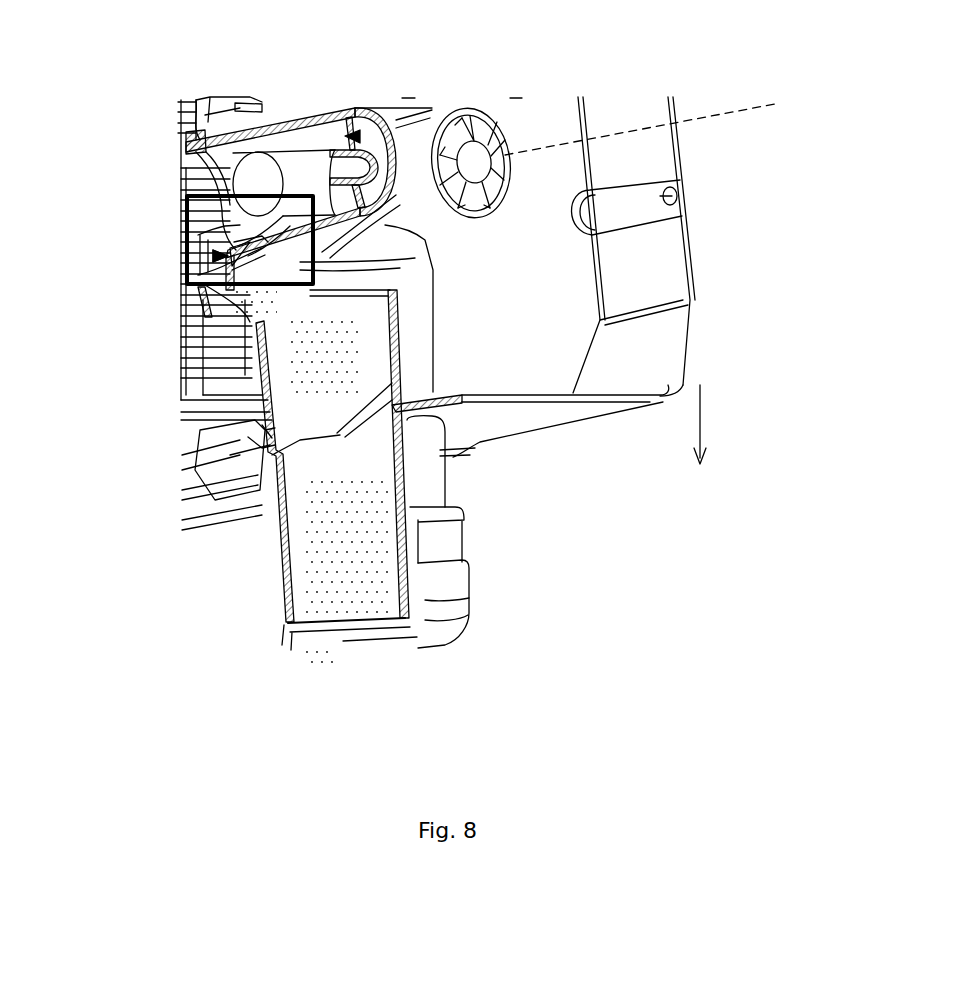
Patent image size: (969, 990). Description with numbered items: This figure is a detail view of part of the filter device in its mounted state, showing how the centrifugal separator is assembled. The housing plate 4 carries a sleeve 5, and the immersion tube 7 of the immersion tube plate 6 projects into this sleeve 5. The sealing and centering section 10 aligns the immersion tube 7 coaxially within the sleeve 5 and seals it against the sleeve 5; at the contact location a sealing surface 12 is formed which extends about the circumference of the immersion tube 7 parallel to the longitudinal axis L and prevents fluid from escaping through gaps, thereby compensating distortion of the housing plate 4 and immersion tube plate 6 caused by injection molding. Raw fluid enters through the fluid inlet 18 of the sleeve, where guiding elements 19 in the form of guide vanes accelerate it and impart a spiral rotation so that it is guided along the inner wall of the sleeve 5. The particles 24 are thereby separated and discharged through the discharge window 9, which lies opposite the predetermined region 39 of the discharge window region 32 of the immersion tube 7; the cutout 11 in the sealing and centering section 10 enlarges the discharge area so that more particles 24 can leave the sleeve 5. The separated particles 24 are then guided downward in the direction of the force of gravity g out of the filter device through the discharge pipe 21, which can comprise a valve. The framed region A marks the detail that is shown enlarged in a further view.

The housing plate 4 is at (570, 278).
The sleeve 5 is at (315, 108).
The immersion tube plate 6 is at (185, 280).
The immersion tube 7 is at (250, 162).
The discharge window 9 is at (200, 296).
The sealing and centering section 10 is at (206, 160).
The cutout 11 is at (203, 250).
The sealing surface 12 is at (229, 84).
The fluid inlet 18 is at (363, 128).
The guiding elements 19 is at (490, 118).
The discharge pipe 21 is at (427, 484).
The particles 24 is at (240, 306).
The discharge window region 32 is at (187, 270).
The predetermined region 39 is at (220, 256).
The region A is at (205, 194).
The longitudinal axis L is at (642, 129).
The force of gravity g is at (710, 424).